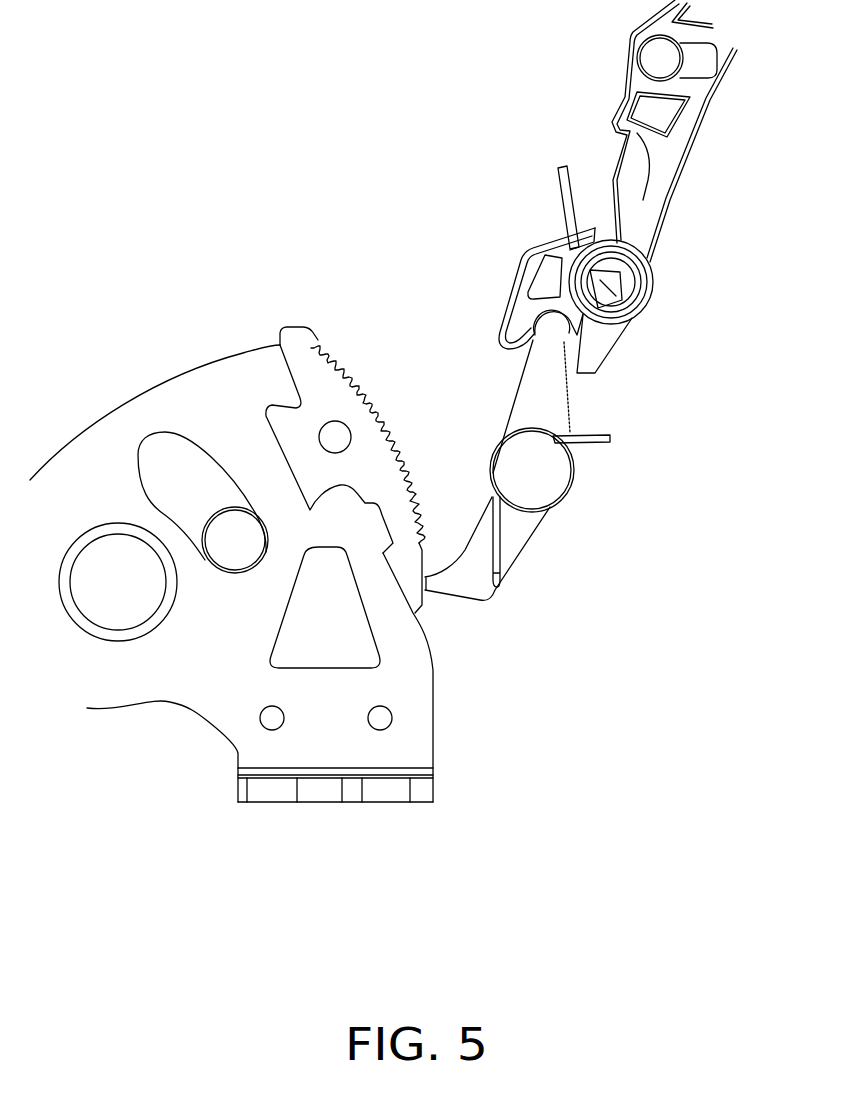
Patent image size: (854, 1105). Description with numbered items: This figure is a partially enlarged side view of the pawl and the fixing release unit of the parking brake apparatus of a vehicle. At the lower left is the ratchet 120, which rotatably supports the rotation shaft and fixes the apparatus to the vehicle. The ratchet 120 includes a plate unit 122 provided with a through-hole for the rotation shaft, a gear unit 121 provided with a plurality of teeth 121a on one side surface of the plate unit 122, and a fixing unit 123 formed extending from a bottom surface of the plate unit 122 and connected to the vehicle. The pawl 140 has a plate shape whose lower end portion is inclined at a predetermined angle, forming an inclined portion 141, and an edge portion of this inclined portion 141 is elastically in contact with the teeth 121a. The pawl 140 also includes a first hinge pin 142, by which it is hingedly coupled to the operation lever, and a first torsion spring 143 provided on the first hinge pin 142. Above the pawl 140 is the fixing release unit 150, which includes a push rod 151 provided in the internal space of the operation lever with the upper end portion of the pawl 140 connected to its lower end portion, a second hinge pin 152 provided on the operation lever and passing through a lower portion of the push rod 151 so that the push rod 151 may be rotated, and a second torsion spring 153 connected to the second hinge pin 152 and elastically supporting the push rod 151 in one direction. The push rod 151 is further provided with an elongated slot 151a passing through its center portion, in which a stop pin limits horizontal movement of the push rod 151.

The ratchet 120 is at (159, 750).
The gear unit 121 is at (341, 390).
The teeth 121a is at (355, 372).
The plate unit 122 is at (232, 385).
The fixing unit 123 is at (420, 792).
The pawl 140 is at (547, 405).
The inclined portion 141 is at (472, 585).
The first hinge pin 142 is at (540, 482).
The first torsion spring 143 is at (598, 443).
The fixing release unit 150 is at (580, 131).
The push rod 151 is at (673, 147).
The elongated slot 151a is at (698, 70).
The second hinge pin 152 is at (617, 275).
The second torsion spring 153 is at (550, 185).